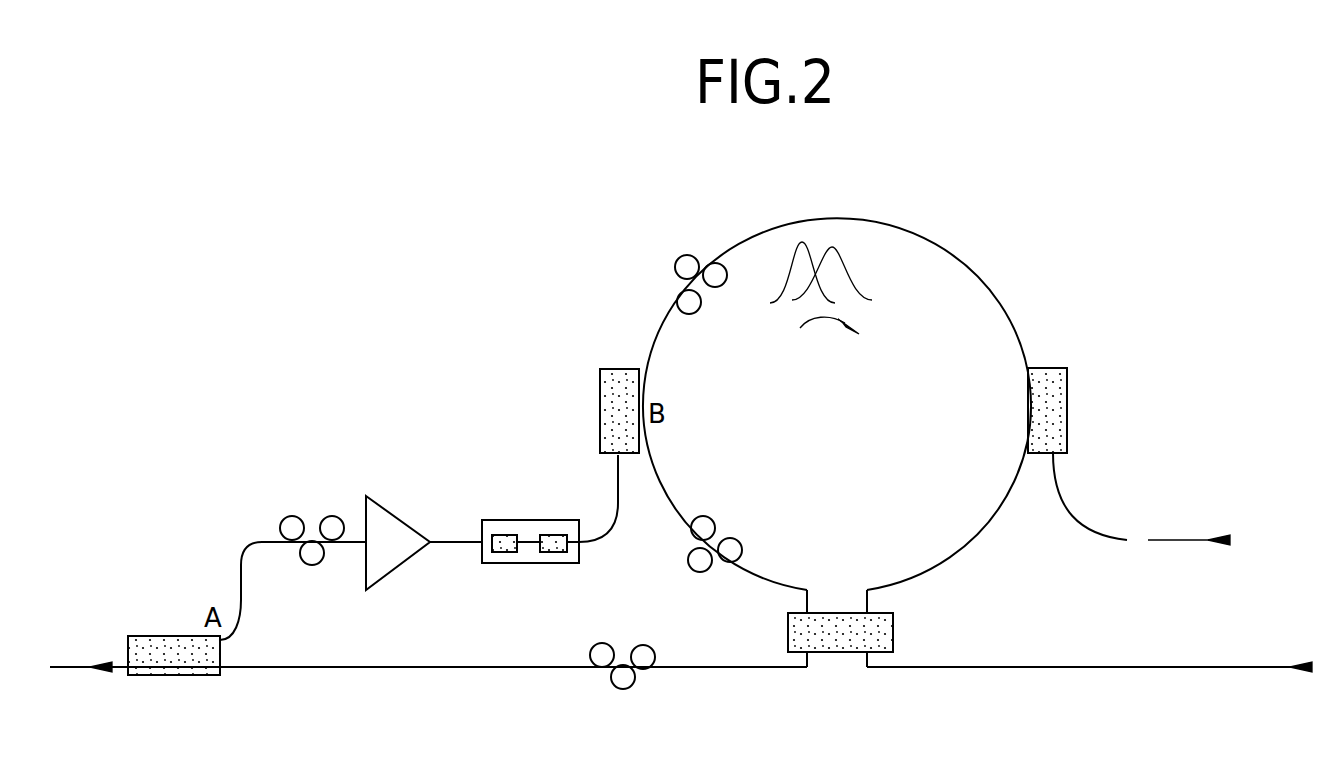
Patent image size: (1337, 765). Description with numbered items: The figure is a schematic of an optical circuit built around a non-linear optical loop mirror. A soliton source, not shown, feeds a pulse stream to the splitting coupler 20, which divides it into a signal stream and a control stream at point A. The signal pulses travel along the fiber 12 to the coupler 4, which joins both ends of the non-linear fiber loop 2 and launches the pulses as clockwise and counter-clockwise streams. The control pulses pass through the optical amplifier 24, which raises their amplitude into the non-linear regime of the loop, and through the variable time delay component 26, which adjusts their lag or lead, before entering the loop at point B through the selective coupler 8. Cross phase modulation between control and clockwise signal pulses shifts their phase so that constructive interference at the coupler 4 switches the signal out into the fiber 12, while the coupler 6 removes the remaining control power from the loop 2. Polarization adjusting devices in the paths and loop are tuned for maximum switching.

The non-linear fiber loop 2 is at (927, 238).
The coupler 4 is at (833, 652).
The coupler 6 is at (1042, 368).
The coupler 8 is at (605, 369).
The fiber 12 is at (1030, 667).
The splitting coupler 20 is at (150, 636).
The optical amplifier 24 is at (392, 510).
The variable time delay component 26 is at (508, 520).